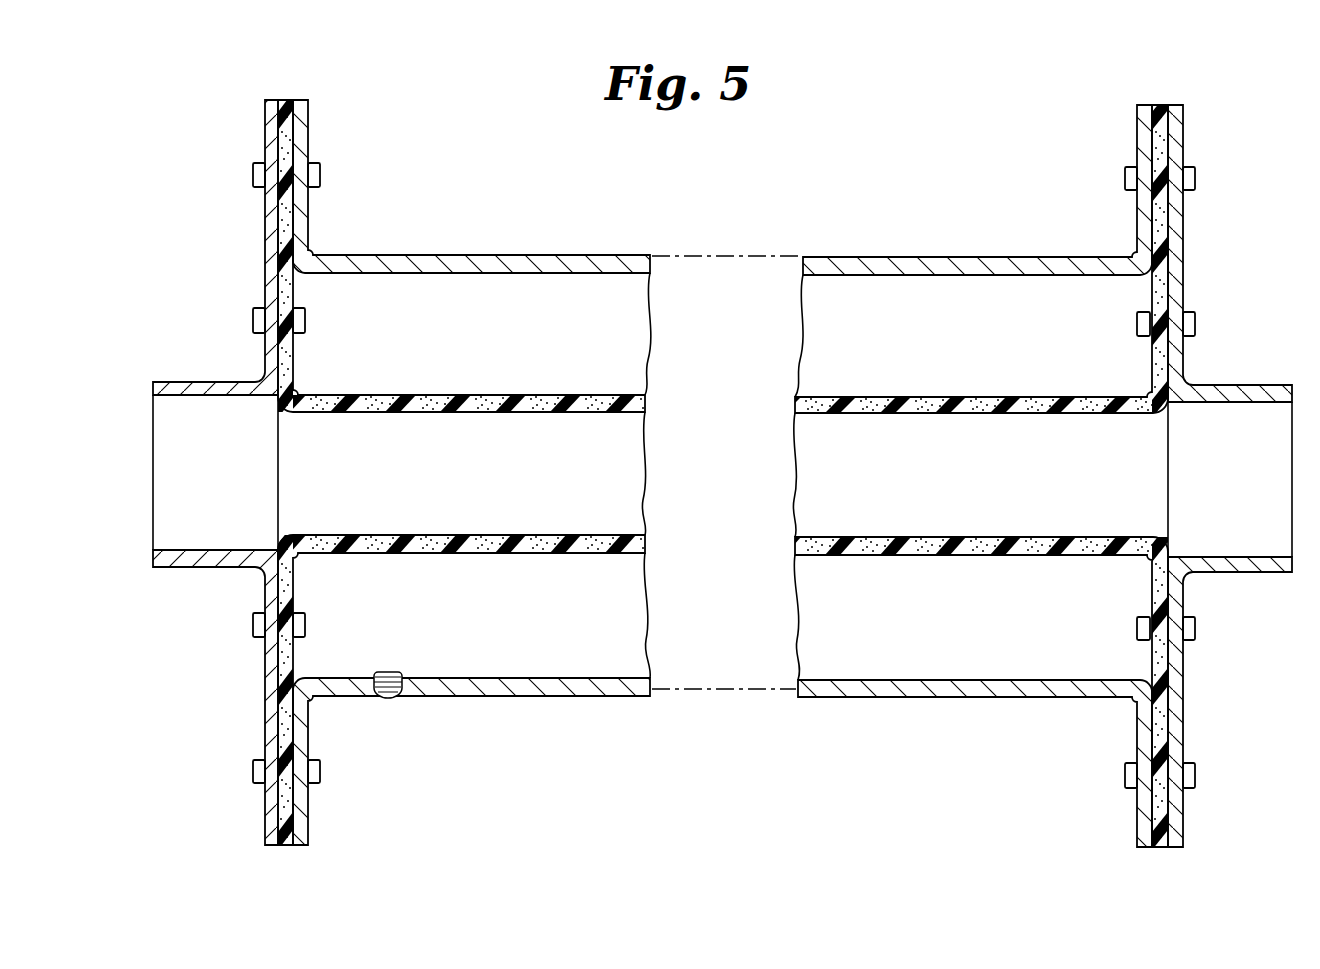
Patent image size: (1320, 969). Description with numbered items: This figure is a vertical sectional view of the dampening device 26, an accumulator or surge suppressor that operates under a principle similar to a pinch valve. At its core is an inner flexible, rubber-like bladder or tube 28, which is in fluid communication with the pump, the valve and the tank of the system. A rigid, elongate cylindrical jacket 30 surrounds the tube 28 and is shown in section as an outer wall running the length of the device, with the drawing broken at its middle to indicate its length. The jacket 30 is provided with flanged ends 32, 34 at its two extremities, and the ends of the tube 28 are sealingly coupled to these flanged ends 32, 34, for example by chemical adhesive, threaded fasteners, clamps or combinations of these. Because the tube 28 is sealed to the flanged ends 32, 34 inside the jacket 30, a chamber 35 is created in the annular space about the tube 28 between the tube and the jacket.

The dampening device 26 is at (328, 88).
The inner flexible tube 28 is at (470, 395).
The rigid cylindrical jacket 30 is at (505, 257).
The flanged end 32 is at (265, 138).
The flanged end 34 is at (1183, 125).
The chamber 35 is at (963, 349).